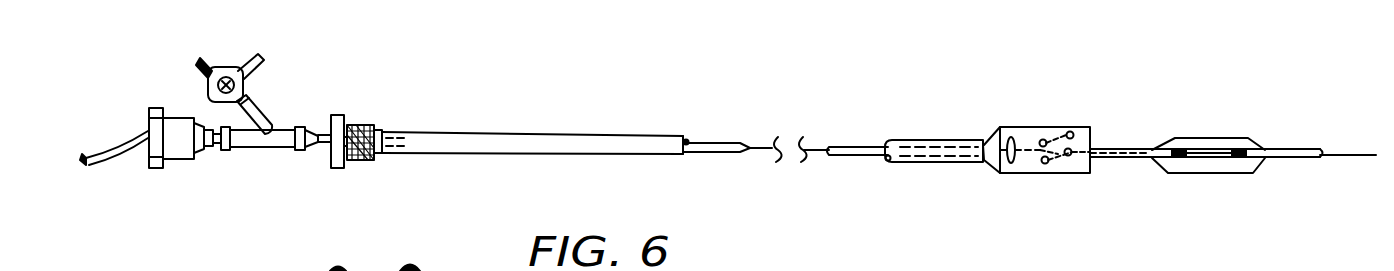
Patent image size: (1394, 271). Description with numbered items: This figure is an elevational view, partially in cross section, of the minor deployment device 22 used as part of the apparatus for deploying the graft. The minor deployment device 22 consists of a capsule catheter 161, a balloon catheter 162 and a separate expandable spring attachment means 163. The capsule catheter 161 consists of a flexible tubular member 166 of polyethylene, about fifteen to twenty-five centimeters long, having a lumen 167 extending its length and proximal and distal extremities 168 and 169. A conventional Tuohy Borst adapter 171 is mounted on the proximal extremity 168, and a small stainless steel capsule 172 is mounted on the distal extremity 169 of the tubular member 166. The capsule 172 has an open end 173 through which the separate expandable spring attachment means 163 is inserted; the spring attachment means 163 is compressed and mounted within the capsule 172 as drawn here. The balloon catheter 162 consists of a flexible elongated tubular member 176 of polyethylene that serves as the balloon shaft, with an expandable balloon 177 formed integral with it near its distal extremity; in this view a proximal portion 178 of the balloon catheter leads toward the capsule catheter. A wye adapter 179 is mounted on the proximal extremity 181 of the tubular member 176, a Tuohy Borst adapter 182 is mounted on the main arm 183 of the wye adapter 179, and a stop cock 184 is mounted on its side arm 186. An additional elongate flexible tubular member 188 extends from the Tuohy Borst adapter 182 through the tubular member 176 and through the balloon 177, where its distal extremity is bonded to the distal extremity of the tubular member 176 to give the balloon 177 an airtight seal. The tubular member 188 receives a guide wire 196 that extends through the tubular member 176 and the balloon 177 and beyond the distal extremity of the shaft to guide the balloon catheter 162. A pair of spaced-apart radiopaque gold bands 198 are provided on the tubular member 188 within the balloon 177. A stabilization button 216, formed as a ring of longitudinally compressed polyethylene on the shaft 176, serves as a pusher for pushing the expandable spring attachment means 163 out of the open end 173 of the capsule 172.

The minor deployment device 22 is at (527, 90).
The capsule catheter 161 is at (915, 100).
The balloon catheter 162 is at (1132, 108).
The expandable spring attachment means 163 is at (1061, 128).
The flexible tubular member 166 is at (598, 155).
The lumen 167 is at (686, 137).
The proximal extremity 168 is at (550, 135).
The distal extremity 169 is at (947, 163).
The Tuohy Borst adapter 171 is at (352, 132).
The capsule 172 is at (1013, 127).
The open end 173 is at (1090, 166).
The flexible elongated tubular member 176 is at (692, 156).
The expandable balloon 177 is at (1230, 138).
The proximal tube 178 is at (852, 147).
The wye adapter 179 is at (240, 152).
The proximal extremity 181 is at (323, 133).
The Tuohy Borst adapter 182 is at (182, 147).
The main arm 183 is at (283, 133).
The stop cock 184 is at (227, 70).
The side arm 186 is at (265, 117).
The elongate flexible tubular member 188 is at (118, 140).
The guide wire 196 is at (1337, 157).
The gold bands 198 is at (1235, 148).
The stabilization button 216 is at (1004, 168).